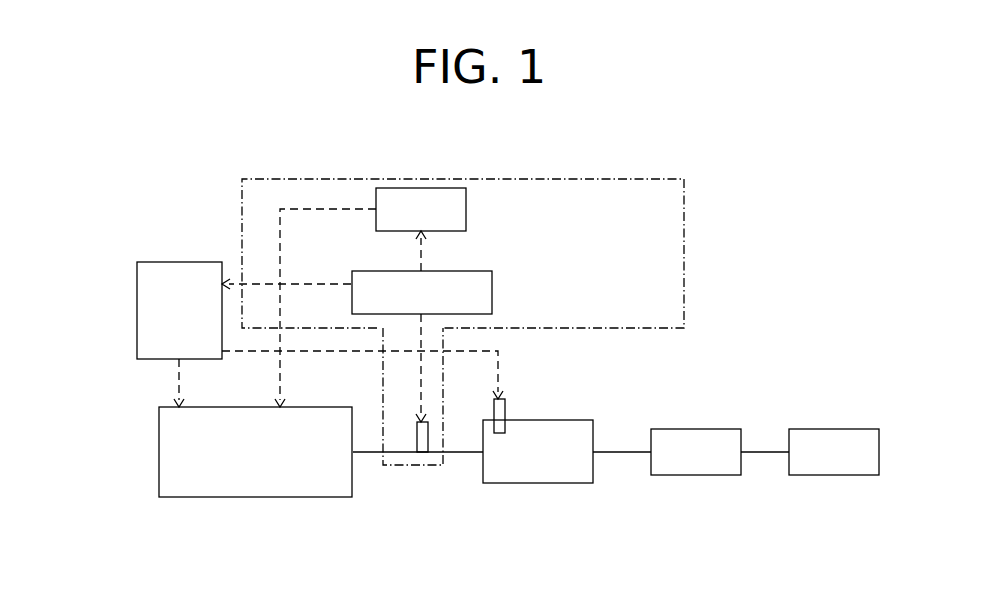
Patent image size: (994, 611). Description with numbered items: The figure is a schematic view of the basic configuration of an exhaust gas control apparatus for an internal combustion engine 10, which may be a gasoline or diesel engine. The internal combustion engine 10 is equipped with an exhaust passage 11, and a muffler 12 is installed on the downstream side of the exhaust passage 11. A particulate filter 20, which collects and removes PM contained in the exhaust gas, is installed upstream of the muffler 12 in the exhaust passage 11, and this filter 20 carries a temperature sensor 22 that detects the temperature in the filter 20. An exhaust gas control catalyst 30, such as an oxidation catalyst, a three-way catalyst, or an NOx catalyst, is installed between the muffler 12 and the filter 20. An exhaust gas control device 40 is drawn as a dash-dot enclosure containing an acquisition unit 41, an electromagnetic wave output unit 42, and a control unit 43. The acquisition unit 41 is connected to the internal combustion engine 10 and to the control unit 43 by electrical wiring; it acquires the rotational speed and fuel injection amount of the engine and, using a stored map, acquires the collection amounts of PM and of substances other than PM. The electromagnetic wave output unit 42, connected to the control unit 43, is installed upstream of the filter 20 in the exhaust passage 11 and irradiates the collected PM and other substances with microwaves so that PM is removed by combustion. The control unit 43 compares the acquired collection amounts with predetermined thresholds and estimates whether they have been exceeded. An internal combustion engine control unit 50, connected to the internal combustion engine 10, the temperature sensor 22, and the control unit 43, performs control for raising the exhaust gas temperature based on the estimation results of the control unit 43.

The internal combustion engine 10 is at (158, 450).
The exhaust passage 11 is at (370, 455).
The muffler 12 is at (833, 429).
The particulate filter 20 is at (520, 483).
The temperature sensor 22 is at (505, 418).
The exhaust gas control catalyst 30 is at (695, 475).
The exhaust gas control device 40 is at (684, 257).
The acquisition unit 41 is at (466, 223).
The electromagnetic wave output unit 42 is at (417, 440).
The control unit 43 is at (492, 280).
The internal combustion engine control unit 50 is at (143, 262).